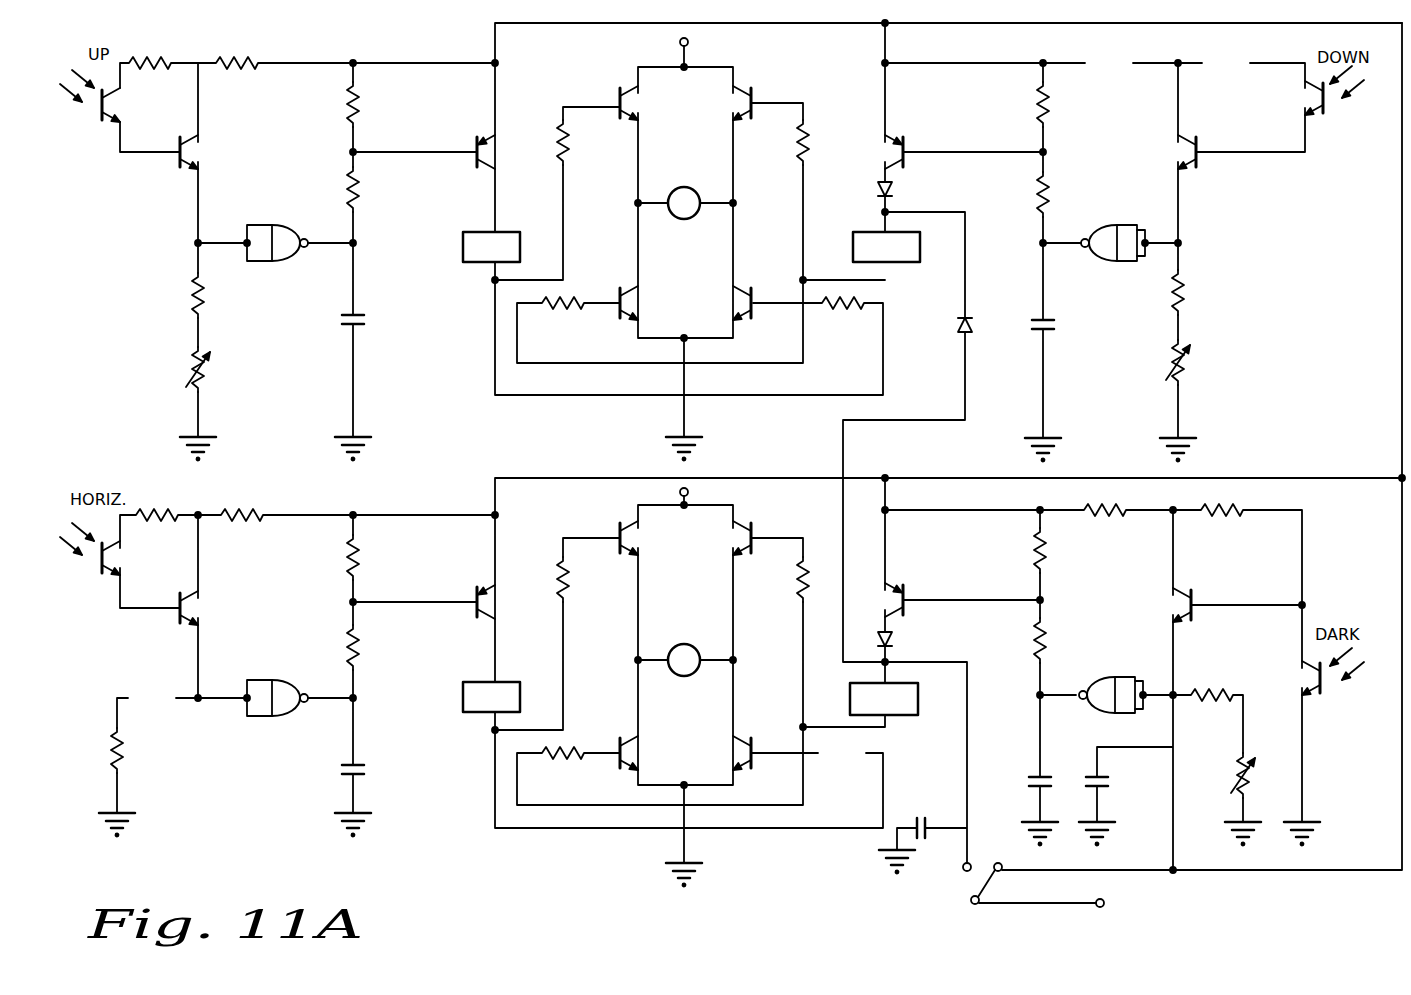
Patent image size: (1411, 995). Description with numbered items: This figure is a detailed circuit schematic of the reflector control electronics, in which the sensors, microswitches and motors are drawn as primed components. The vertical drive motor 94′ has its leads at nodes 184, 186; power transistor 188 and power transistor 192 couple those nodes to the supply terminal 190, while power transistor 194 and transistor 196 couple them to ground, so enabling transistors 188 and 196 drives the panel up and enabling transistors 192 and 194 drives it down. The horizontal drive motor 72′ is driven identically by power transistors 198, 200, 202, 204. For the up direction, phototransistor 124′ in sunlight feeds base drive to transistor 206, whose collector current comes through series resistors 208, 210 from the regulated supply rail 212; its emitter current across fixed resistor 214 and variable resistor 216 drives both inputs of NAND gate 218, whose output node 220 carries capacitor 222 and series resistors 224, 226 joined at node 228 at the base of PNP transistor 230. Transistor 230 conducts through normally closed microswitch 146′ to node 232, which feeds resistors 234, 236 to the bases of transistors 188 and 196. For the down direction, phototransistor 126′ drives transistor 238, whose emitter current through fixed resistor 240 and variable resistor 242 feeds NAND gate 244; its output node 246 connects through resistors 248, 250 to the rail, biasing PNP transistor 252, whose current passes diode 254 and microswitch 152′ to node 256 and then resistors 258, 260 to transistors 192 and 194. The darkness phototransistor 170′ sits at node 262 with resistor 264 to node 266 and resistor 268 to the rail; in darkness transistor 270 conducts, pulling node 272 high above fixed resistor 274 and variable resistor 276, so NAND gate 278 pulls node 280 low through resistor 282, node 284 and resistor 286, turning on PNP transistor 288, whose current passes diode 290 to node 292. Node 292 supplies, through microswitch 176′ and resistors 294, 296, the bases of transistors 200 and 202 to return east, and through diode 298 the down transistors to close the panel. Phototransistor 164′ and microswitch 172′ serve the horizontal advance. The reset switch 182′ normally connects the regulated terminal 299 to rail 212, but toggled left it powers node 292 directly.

The resistor 208 is at (168, 63).
The resistor 210 is at (246, 63).
The phototransistor 124′ is at (100, 128).
The transistor 206 is at (178, 168).
The resistor 226 is at (362, 105).
The node 228 is at (353, 152).
The resistor 224 is at (360, 200).
The PNP transistor 230 is at (476, 140).
The microswitch 146′ is at (478, 232).
The node 220 is at (355, 245).
The capacitor 222 is at (362, 308).
The fixed resistor 214 is at (192, 310).
The variable resistor 216 is at (190, 365).
The NAND gate 218 is at (292, 268).
The node 232 is at (492, 282).
The supply terminal 190 is at (678, 42).
The resistor 234 is at (560, 120).
The power transistor 188 is at (619, 98).
The power transistor 192 is at (755, 98).
The resistor 258 is at (806, 120).
The vertical drive motor 94′ is at (690, 188).
The node 184 is at (638, 206).
The node 186 is at (735, 203).
The power transistor 194 is at (619, 295).
The transistor 196 is at (755, 295).
The node 256 is at (806, 280).
The resistor 260 is at (566, 310).
The resistor 236 is at (848, 310).
The microswitch 152′ is at (862, 232).
The diode 298 is at (970, 318).
The PNP transistor 252 is at (904, 140).
The diode 254 is at (893, 195).
The resistor 250 is at (1040, 112).
The resistor 248 is at (1036, 192).
The node 246 is at (1040, 243).
The NAND gate 244 is at (1105, 262).
The transistor 238 is at (1198, 145).
The fixed resistor 240 is at (1185, 295).
The variable resistor 242 is at (1186, 362).
The regulated supply rail 212 is at (1400, 280).
The phototransistor 126′ is at (1326, 112).
The phototransistor 164′ is at (100, 570).
The microswitch 172′ is at (464, 680).
The power transistor 198 is at (619, 533).
The power transistor 200 is at (754, 533).
The horizontal drive motor 72′ is at (688, 658).
The resistor 294 is at (800, 598).
The power transistor 202 is at (619, 742).
The power transistor 204 is at (755, 745).
The resistor 296 is at (558, 760).
The PNP transistor 288 is at (904, 585).
The diode 290 is at (890, 635).
The node 292 is at (890, 662).
The microswitch 176′ is at (900, 715).
The reset switch 182′ is at (975, 888).
The resistor 286 is at (1035, 545).
The node 284 is at (1042, 598).
The resistor 282 is at (1044, 640).
The node 280 is at (1038, 697).
The NAND gate 278 is at (1090, 675).
The node 266 is at (1173, 510).
The resistor 268 is at (1110, 514).
The resistor 264 is at (1236, 518).
The transistor 270 is at (1196, 595).
The node 262 is at (1305, 603).
The node 272 is at (1180, 690).
The fixed resistor 274 is at (1185, 703).
The variable resistor 276 is at (1237, 770).
The phototransistor 170′ is at (1322, 695).
The regulated supply voltage terminal 299 is at (1100, 907).